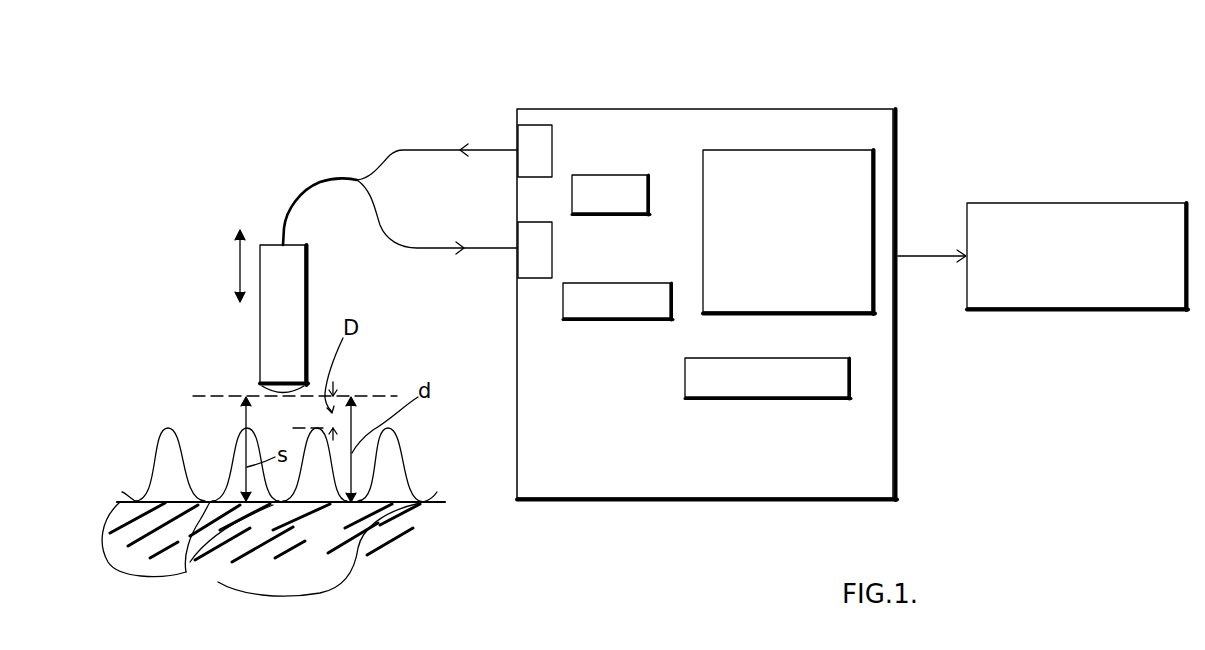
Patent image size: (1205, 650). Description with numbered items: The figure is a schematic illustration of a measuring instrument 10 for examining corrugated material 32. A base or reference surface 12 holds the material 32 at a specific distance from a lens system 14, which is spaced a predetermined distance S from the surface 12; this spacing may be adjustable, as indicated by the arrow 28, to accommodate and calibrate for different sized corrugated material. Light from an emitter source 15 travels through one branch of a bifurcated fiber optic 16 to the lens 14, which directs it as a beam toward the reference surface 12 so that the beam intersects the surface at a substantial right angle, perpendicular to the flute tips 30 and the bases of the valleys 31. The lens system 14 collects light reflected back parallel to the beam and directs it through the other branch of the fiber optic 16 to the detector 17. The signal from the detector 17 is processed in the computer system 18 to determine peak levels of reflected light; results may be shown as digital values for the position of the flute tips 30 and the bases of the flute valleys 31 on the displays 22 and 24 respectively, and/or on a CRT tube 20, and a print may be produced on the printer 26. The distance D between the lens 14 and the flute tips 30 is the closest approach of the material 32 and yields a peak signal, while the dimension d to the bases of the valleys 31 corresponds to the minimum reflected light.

The measuring instrument 10 is at (849, 103).
The reference surface 12 is at (365, 503).
The lens system 14 is at (260, 333).
The emitter source 15 is at (543, 145).
The bifurcated fiber optic 16 is at (296, 203).
The detector 17 is at (538, 271).
The computer system 18 is at (533, 505).
The CRT tube 20 is at (802, 190).
The display 22 is at (648, 183).
The display 24 is at (653, 321).
The printer 26 is at (1140, 295).
The arrow 28 is at (240, 268).
The flute tips 30 is at (247, 428).
The bases of the valleys 31 is at (240, 588).
The corrugated material 32 is at (412, 483).